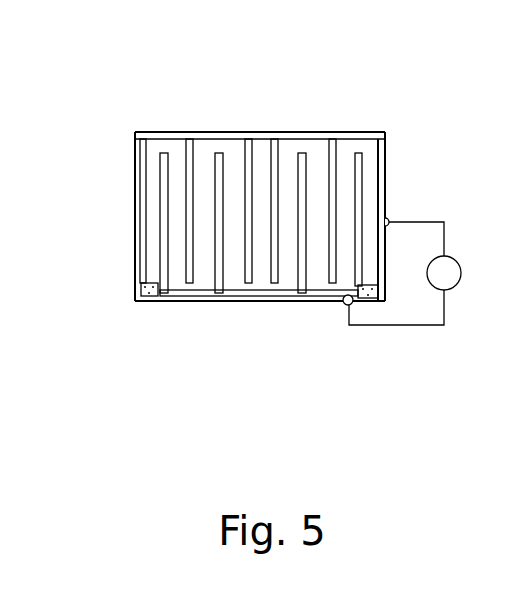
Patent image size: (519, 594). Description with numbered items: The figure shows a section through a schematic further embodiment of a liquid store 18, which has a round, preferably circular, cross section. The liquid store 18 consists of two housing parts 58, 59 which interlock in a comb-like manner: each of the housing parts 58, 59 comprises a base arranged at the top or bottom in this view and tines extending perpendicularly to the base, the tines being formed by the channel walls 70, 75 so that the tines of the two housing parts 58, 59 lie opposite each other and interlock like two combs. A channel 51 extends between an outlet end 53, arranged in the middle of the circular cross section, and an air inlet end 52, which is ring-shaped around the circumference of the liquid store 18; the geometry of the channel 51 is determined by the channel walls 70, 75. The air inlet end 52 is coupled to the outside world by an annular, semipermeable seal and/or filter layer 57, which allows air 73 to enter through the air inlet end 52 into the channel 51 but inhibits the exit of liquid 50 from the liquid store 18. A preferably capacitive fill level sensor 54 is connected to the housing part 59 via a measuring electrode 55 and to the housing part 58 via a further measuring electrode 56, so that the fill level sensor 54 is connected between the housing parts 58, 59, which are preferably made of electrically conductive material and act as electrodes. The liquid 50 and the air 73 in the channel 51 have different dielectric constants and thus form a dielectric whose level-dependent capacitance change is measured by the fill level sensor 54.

The liquid store 18 is at (309, 406).
The liquid 50 is at (231, 279).
The channel 51 is at (177, 147).
The air inlet end 52 is at (134, 310).
The outlet end 53 is at (248, 157).
The fill level sensor 54 is at (457, 285).
The measuring electrode 55 is at (345, 305).
The further measuring electrode 56 is at (388, 218).
The semipermeable seal and/or filter layer 57 is at (151, 298).
The housing part 58 is at (306, 132).
The housing part 59 is at (258, 296).
The channel wall 70 is at (273, 157).
The air 73 is at (152, 253).
The channel wall 75 is at (358, 157).